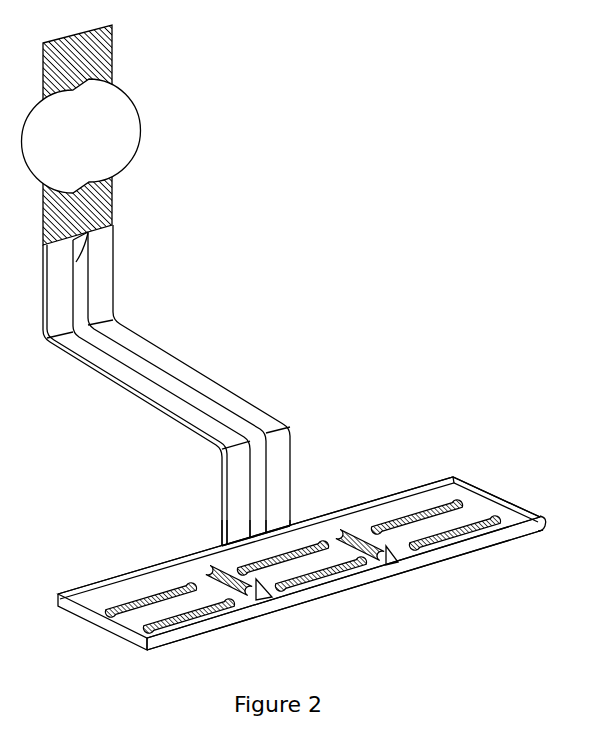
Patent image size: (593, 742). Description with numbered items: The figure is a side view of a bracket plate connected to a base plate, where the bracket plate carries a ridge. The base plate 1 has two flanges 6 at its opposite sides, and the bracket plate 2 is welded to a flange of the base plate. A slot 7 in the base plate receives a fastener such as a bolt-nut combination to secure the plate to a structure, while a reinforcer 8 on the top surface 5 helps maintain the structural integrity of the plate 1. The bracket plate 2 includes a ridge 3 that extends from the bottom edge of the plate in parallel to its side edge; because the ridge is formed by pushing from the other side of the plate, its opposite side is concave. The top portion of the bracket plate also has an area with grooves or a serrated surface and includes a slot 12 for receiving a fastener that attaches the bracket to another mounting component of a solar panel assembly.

The plate 1 is at (390, 588).
The plate 2 is at (197, 345).
The ridge 3 is at (205, 402).
The top surface 5 is at (110, 622).
The flanges 6 is at (503, 513).
The slot 7 is at (147, 608).
The reinforcer 8 is at (207, 553).
The slot 12 is at (113, 101).